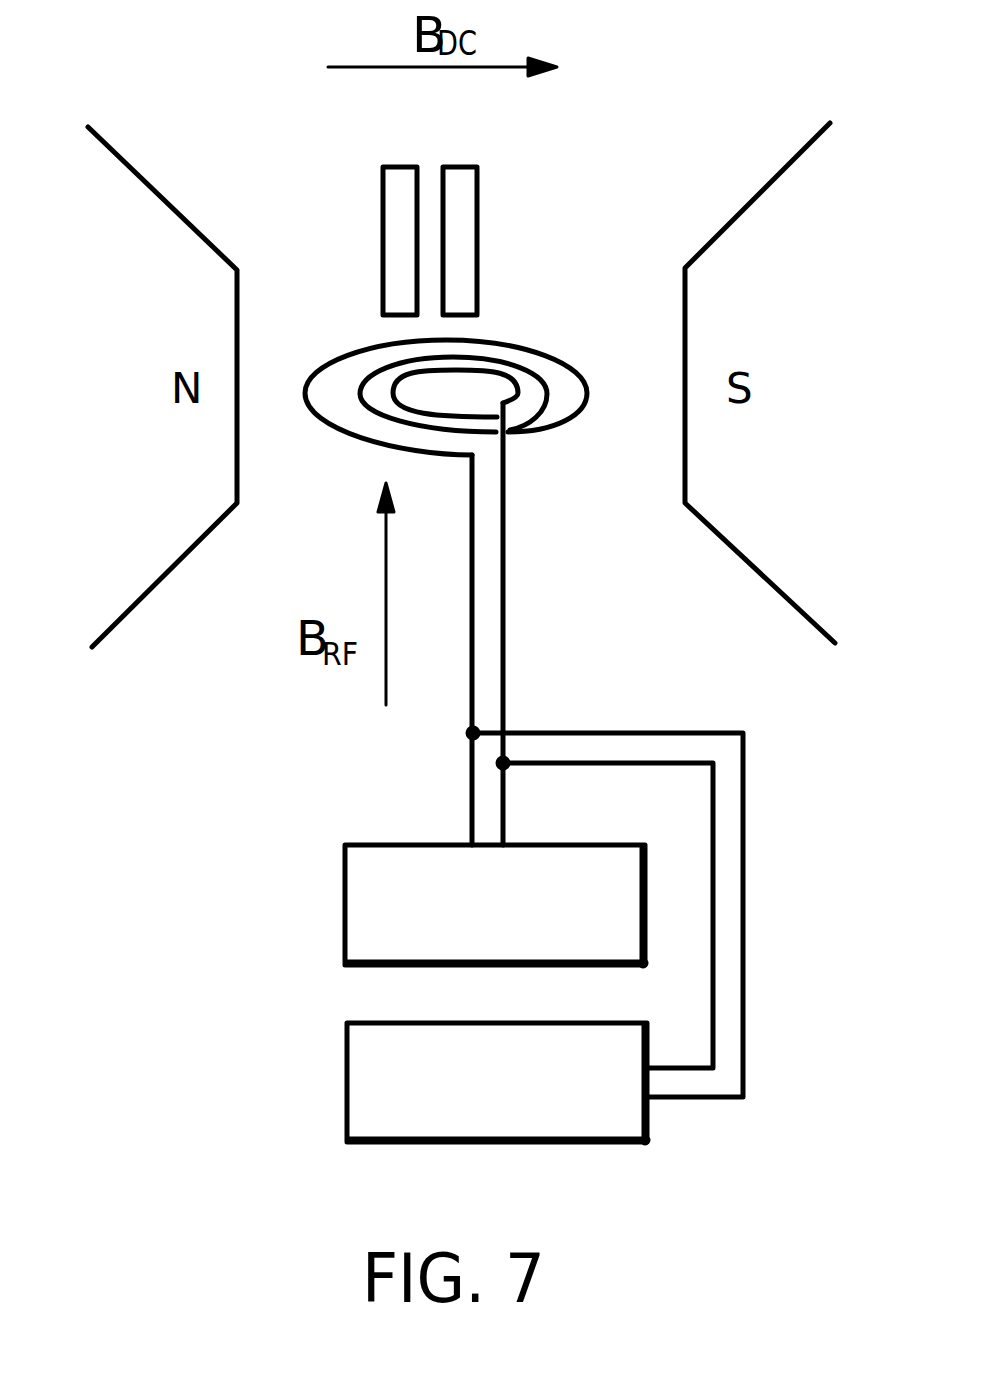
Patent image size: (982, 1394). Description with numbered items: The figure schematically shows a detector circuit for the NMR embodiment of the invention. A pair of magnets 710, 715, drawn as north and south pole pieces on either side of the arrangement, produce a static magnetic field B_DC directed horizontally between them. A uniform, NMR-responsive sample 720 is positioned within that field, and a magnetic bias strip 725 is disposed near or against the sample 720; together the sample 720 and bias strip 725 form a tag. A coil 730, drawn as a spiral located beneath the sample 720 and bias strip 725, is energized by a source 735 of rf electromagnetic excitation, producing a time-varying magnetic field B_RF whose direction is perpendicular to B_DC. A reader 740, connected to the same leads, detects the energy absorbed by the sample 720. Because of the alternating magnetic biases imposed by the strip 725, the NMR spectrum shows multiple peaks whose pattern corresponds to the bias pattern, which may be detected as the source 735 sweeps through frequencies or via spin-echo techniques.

The magnet 710 is at (110, 146).
The magnet 715 is at (808, 142).
The NMR-responsive sample 720 is at (455, 165).
The magnetic bias strip 725 is at (398, 165).
The coil 730 is at (545, 447).
The source of rf electromagnetic excitation 735 is at (345, 907).
The reader 740 is at (347, 1081).